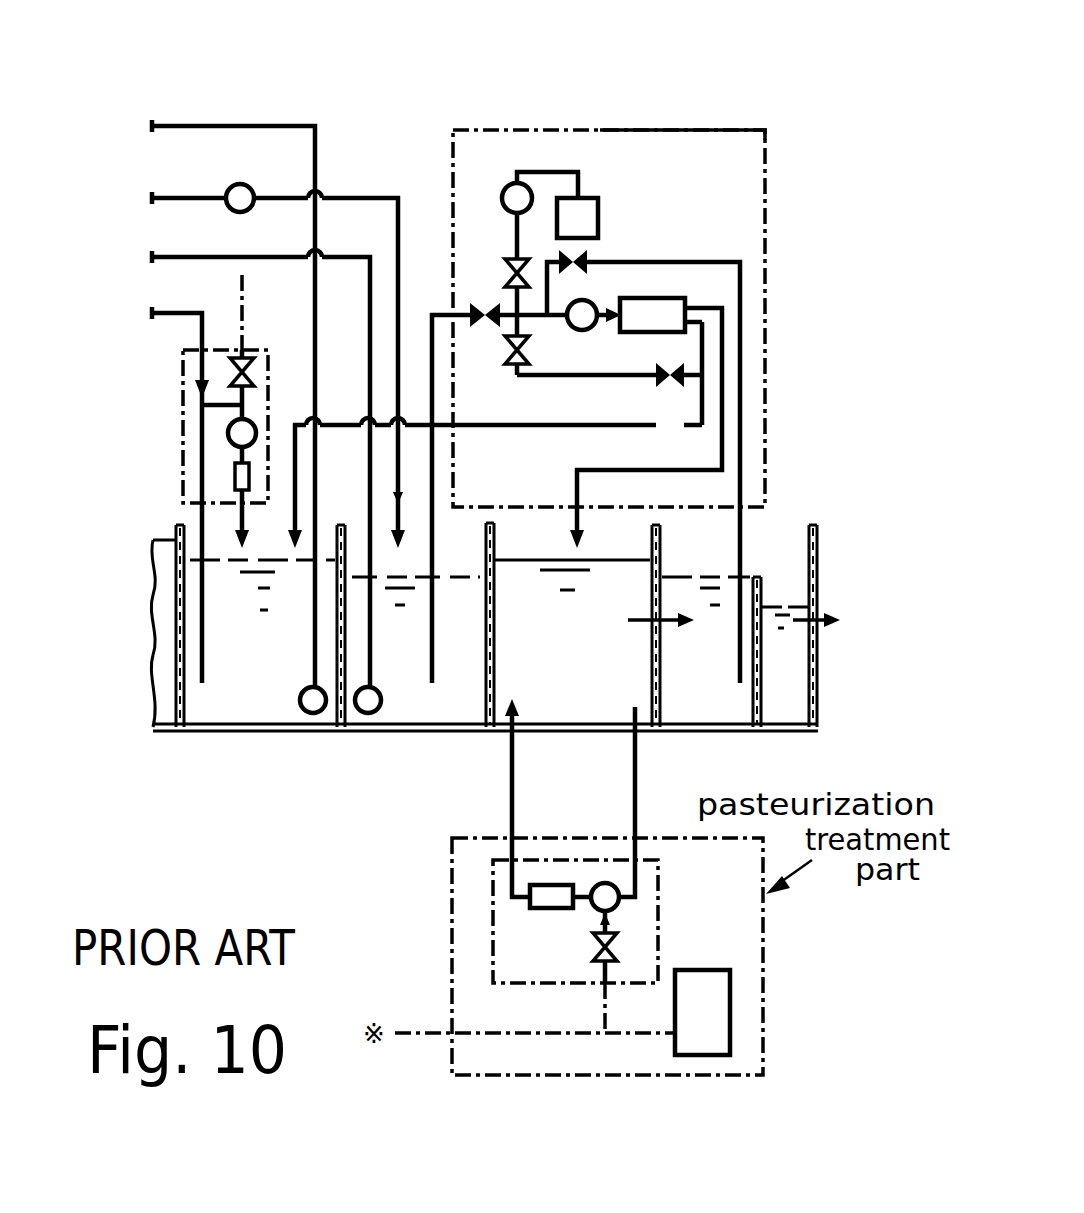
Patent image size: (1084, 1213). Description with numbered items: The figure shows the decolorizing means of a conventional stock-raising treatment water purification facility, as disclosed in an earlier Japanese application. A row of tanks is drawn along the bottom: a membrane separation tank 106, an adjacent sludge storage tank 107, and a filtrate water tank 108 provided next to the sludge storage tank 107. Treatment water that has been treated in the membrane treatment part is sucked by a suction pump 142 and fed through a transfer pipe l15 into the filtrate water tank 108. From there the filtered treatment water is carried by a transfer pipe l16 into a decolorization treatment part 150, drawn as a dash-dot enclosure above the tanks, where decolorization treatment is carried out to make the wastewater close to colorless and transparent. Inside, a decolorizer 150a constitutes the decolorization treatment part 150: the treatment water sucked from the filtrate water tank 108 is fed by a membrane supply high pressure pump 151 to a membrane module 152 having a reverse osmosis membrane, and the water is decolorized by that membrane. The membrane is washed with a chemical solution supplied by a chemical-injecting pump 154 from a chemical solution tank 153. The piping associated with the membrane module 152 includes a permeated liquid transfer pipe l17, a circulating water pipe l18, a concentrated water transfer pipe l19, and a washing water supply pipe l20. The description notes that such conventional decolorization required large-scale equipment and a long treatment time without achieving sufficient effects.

The suction pump 142 is at (228, 188).
The transfer pipe l15 is at (370, 198).
The transfer pipe l16 is at (413, 338).
The permeated liquid transfer pipe l17 is at (647, 472).
The circulating water pipe l18 is at (583, 378).
The concentrated water transfer pipe l19 is at (590, 428).
The washing water supply pipe l20 is at (745, 384).
The decolorization treatment part 150 is at (562, 100).
The decolorizer 150a is at (662, 127).
The membrane supply high pressure pump 151 is at (595, 308).
The membrane module 152 is at (620, 330).
The chemical solution tank 153 is at (592, 208).
The chemical-injecting pump 154 is at (505, 190).
The membrane separation tank 106 is at (160, 731).
The sludge storage tank 107 is at (240, 731).
The filtrate water tank 108 is at (385, 731).